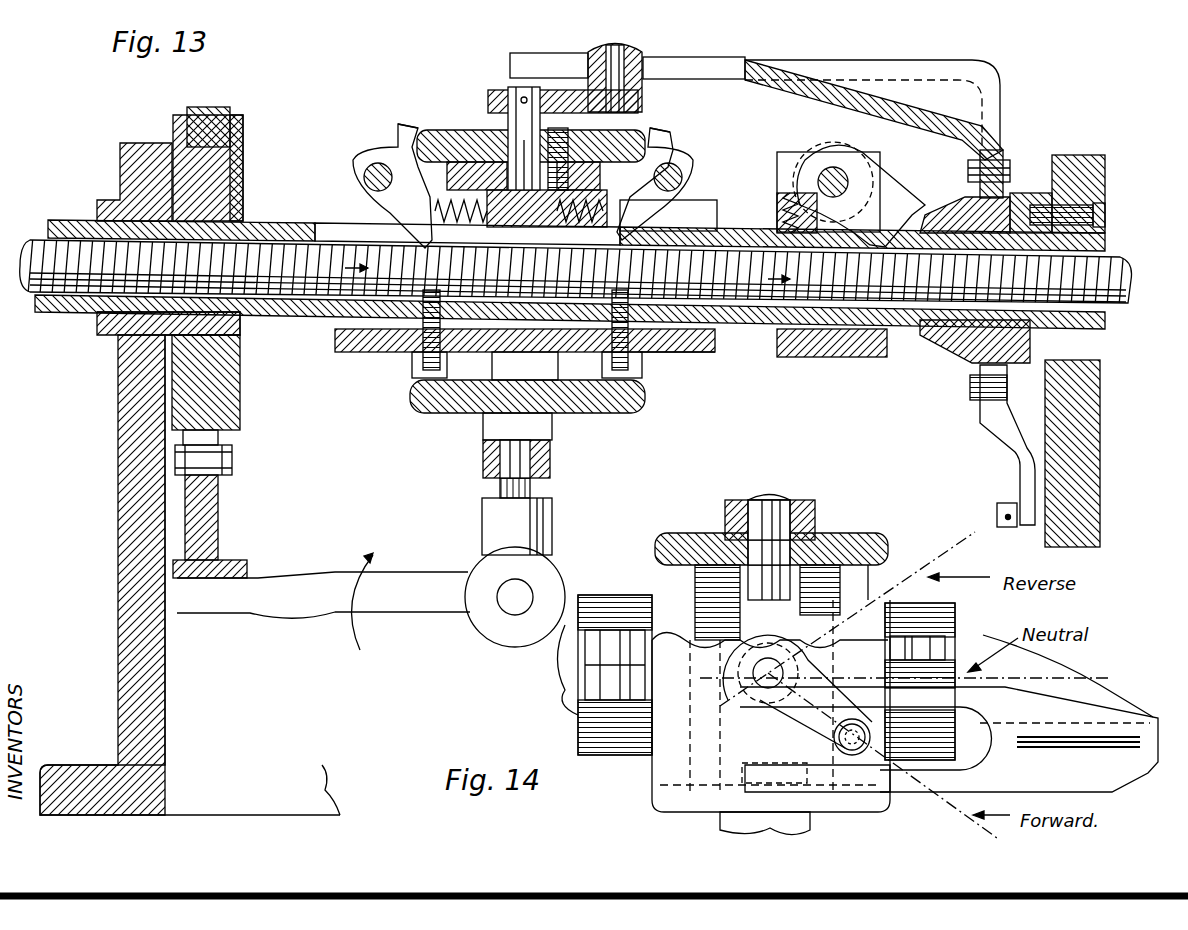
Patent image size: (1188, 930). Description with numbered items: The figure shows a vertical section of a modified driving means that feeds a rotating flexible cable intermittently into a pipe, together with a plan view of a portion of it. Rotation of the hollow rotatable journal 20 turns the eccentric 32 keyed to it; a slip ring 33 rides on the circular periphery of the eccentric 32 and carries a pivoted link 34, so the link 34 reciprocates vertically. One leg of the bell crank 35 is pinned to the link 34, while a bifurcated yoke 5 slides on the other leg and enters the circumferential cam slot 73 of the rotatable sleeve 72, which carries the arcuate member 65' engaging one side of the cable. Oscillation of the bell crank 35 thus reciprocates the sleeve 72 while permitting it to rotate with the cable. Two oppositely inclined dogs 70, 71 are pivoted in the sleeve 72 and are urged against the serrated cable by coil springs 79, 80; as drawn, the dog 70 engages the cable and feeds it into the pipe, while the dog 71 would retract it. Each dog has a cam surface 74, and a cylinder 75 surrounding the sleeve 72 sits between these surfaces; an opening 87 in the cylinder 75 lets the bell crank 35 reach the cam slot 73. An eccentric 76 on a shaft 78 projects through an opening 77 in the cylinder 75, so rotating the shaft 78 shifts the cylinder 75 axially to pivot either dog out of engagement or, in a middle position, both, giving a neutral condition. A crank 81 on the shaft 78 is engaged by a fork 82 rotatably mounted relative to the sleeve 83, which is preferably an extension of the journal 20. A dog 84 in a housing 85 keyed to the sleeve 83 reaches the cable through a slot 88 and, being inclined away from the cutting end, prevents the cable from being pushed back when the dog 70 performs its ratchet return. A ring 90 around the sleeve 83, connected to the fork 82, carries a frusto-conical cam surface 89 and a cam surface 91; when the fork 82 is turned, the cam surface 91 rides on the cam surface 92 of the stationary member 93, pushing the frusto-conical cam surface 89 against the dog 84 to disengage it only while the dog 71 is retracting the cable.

In FIG. 13, the bifurcated yoke 5 is at (484, 425).
In FIG. 13, the hollow rotatable journal 20 is at (138, 217).
In FIG. 13, the eccentric 32 is at (233, 187).
In FIG. 13, the slip ring 33 is at (225, 113).
In FIG. 13, the link 34 is at (213, 520).
In FIG. 13, the bell crank 35 is at (493, 517).
In FIG. 14, the bell crank 35 is at (812, 520).
In FIG. 13, the arcuate member 65' is at (677, 377).
In FIG. 13, the dog 70 is at (372, 157).
In FIG. 14, the dog 70 is at (677, 637).
In FIG. 13, the dog 71 is at (693, 170).
In FIG. 14, the dog 71 is at (955, 607).
In FIG. 13, the rotatable sleeve 72 is at (705, 338).
In FIG. 13, the circumferential cam slot 73 is at (552, 368).
In FIG. 14, the circumferential cam slot 73 is at (887, 562).
In FIG. 13, the cam surface 74 is at (414, 125).
In FIG. 13, the cylinder 75 is at (458, 128).
In FIG. 13, the eccentric 76 is at (545, 131).
In FIG. 14, the eccentric 76 is at (700, 722).
In FIG. 13, the opening 77 is at (585, 137).
In FIG. 13, the shaft 78 is at (502, 88).
In FIG. 13, the coil spring 79 is at (338, 210).
In FIG. 13, the coil spring 80 is at (627, 200).
In FIG. 13, the crank 81 is at (570, 52).
In FIG. 14, the crank 81 is at (783, 717).
In FIG. 13, the fork 82 is at (697, 60).
In FIG. 14, the fork 82 is at (1055, 782).
In FIG. 13, the sleeve 83 is at (1107, 243).
In FIG. 13, the dog 84 is at (866, 195).
In FIG. 13, the housing 85 is at (868, 358).
In FIG. 13, the opening 87 is at (614, 418).
In FIG. 14, the opening 87 is at (806, 538).
In FIG. 13, the slot 88 is at (907, 232).
In FIG. 13, the frusto-conical cam surface 89 is at (955, 197).
In FIG. 13, the ring 90 is at (956, 335).
In FIG. 13, the cam surface 91 is at (1017, 365).
In FIG. 13, the cam surface 92 is at (1148, 266).
In FIG. 13, the stationary member 93 is at (1037, 192).